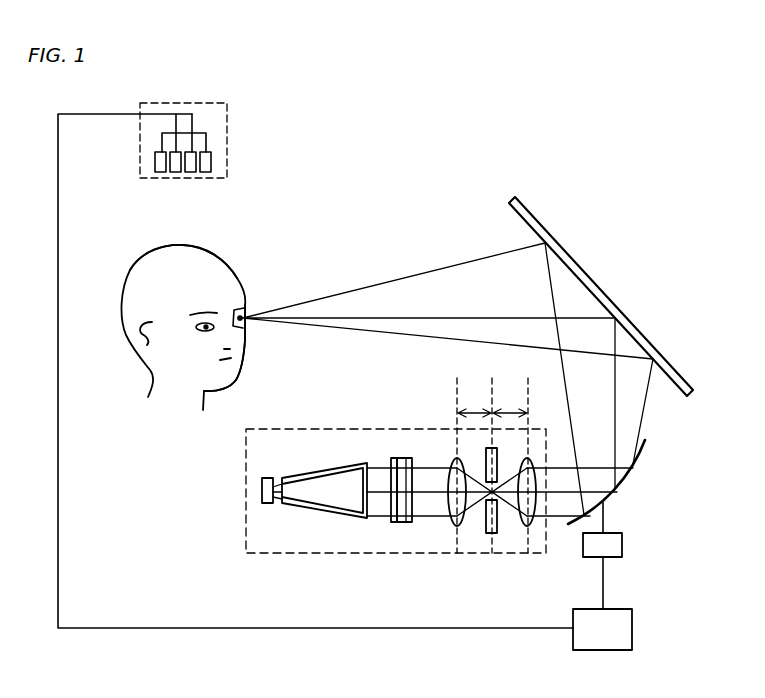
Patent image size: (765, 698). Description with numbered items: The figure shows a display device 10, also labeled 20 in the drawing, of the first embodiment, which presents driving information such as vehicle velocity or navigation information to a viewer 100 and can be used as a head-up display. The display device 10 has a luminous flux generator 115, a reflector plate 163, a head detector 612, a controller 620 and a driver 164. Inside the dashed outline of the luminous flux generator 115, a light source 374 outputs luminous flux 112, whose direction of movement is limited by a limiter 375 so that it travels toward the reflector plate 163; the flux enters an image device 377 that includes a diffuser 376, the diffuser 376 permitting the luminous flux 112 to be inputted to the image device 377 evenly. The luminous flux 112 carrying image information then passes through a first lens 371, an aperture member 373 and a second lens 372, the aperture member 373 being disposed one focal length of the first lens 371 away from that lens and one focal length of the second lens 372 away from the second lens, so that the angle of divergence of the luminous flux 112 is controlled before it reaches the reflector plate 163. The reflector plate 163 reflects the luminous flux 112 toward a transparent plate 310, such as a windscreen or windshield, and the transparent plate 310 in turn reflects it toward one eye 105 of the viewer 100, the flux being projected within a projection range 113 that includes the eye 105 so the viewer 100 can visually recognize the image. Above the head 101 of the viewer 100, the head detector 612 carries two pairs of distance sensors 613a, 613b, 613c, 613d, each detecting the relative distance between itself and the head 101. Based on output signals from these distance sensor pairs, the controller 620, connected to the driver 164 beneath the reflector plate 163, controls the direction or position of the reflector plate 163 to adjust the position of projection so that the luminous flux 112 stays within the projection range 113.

The display device 10 is at (639, 227).
The head mounted display 20 is at (630, 221).
The viewer 100 is at (186, 300).
The head 101 is at (185, 245).
The eye 105 is at (246, 312).
The luminous flux 112 is at (358, 290).
The projection range 113 is at (243, 346).
The luminous flux generator 115 is at (435, 499).
The reflector plate 163 is at (627, 477).
The driver 164 is at (622, 547).
The transparent plate 310 is at (532, 215).
The first lens 371 is at (455, 527).
The second lens 372 is at (527, 527).
The aperture member 373 is at (492, 534).
The light source 374 is at (268, 504).
The limiter 375 is at (323, 511).
The diffuser 376 is at (393, 523).
The image device 377 is at (410, 523).
The head detector 612 is at (185, 169).
The distance sensor 613a is at (155, 162).
The distance sensor 613b is at (190, 172).
The distance sensor 613c is at (176, 172).
The distance sensor 613d is at (211, 162).
The controller 620 is at (632, 628).